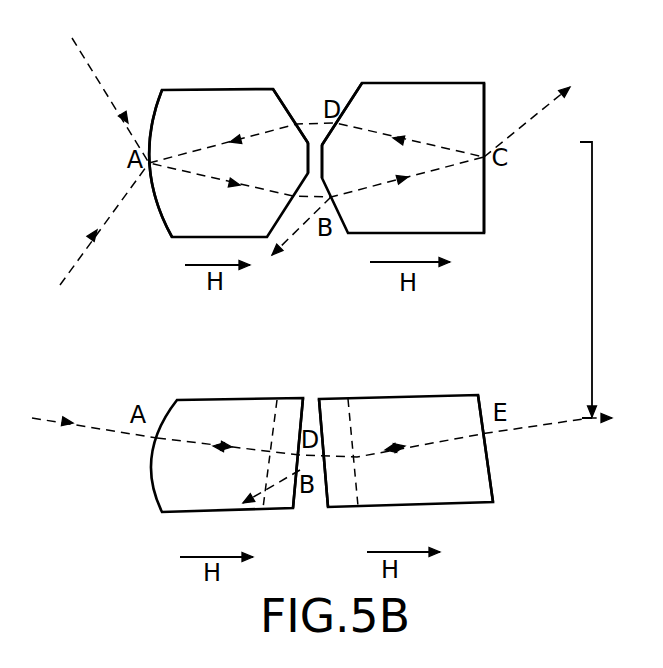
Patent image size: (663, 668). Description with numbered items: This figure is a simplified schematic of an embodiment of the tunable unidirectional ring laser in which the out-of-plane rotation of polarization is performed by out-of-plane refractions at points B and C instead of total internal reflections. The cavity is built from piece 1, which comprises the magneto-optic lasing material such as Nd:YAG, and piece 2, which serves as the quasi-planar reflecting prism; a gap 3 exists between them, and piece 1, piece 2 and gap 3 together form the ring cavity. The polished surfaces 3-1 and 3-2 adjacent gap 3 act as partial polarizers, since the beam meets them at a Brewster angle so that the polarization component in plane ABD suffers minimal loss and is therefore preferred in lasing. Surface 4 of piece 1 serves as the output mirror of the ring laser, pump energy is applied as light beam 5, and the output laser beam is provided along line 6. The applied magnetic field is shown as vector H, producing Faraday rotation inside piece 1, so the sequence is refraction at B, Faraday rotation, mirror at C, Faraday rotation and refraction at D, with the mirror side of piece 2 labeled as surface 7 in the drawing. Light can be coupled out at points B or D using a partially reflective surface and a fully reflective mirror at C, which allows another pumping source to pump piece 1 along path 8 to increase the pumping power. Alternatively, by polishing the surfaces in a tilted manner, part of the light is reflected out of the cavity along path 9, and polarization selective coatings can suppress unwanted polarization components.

The piece 1 is at (188, 126).
The piece 2 is at (438, 120).
The gap 3 is at (311, 113).
The surface 3-1 is at (293, 125).
The surface 3-2 is at (343, 115).
The surface 4 is at (153, 103).
The light beam 5 is at (86, 219).
The line 6 is at (561, 247).
The exit face of second prism 7 is at (493, 207).
The path 8 is at (82, 305).
The path 9 is at (275, 352).